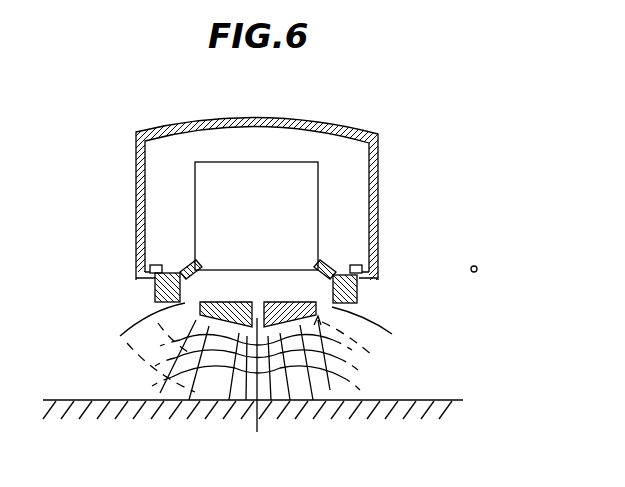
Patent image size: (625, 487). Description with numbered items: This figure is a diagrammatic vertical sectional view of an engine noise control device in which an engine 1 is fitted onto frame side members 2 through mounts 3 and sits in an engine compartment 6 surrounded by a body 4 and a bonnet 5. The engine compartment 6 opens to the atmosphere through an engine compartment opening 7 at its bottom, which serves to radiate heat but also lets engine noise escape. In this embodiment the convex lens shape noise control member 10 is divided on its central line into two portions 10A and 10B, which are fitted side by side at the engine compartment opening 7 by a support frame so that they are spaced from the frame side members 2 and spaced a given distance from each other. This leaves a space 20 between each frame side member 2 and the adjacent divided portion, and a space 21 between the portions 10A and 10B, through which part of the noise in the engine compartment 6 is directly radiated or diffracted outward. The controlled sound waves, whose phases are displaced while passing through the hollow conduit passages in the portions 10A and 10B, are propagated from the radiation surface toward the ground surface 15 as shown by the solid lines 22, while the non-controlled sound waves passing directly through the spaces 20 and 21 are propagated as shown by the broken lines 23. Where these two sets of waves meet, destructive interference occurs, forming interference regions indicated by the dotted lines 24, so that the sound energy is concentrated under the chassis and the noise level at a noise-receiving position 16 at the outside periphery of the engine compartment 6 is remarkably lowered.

The engine 1 is at (308, 208).
The frame side members 2 is at (358, 293).
The mounts 3 is at (325, 273).
The body 4 is at (377, 205).
The bonnet 5 is at (308, 120).
The engine compartment 6 is at (357, 167).
The engine compartment opening 7 is at (259, 300).
The noise control member 10 is at (289, 293).
The divided portion of noise control member 10A is at (281, 300).
The divided portion of noise control member 10B is at (249, 305).
The ground surface 15 is at (438, 404).
The noise-receiving position 16 is at (477, 271).
The space 20 is at (257, 329).
The space 21 is at (255, 390).
The solid lines 22 is at (308, 383).
The broken lines 23 is at (365, 354).
The dotted lines 24 is at (332, 392).